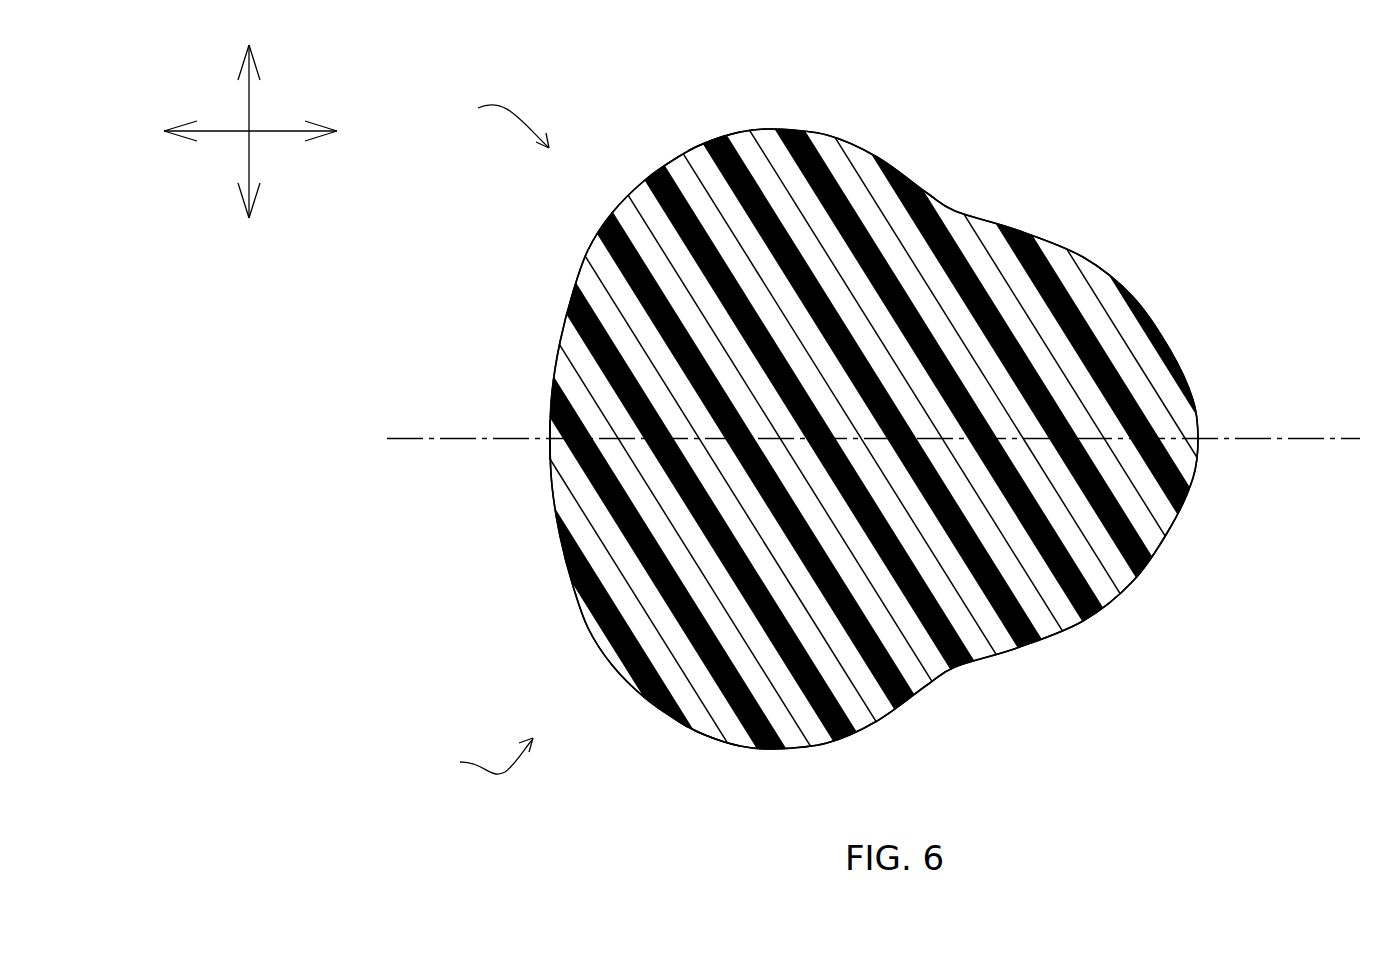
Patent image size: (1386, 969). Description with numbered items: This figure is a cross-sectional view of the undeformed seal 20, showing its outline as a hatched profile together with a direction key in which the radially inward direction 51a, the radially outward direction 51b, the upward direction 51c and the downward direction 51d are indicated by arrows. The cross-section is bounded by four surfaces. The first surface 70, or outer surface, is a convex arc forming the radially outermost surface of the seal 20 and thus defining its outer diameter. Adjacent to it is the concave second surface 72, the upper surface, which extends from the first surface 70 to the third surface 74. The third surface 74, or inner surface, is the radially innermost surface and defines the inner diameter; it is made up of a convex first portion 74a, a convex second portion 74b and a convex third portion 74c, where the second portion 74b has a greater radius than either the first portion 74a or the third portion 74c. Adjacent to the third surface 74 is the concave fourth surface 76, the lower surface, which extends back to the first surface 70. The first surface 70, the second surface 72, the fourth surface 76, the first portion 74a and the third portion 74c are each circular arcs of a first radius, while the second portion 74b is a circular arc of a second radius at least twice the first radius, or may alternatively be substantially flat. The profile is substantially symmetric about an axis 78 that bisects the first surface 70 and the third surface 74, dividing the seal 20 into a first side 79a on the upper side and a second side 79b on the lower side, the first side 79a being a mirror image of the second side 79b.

The seal 20 is at (1213, 137).
The first surface 70 is at (1199, 438).
The second surface 72 is at (958, 211).
The third surface 74 is at (556, 352).
The first portion 74a is at (704, 143).
The second portion 74b is at (552, 447).
The third portion 74c is at (704, 735).
The fourth surface 76 is at (942, 678).
The axis 78 is at (410, 439).
The first side 79a is at (487, 123).
The second side 79b is at (471, 756).
The radially inward direction 51a is at (215, 131).
The radially outward direction 51b is at (282, 131).
The upward direction 51c is at (249, 98).
The downward direction 51d is at (249, 163).